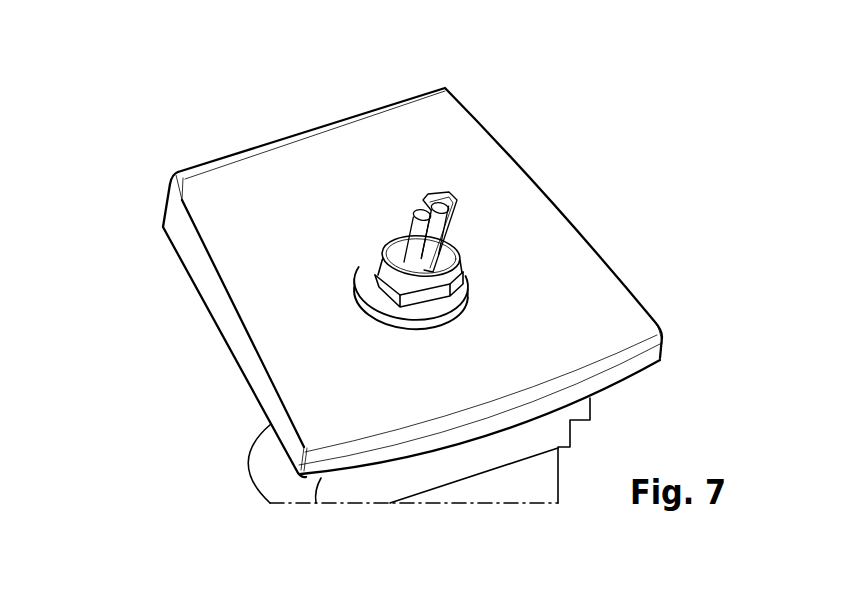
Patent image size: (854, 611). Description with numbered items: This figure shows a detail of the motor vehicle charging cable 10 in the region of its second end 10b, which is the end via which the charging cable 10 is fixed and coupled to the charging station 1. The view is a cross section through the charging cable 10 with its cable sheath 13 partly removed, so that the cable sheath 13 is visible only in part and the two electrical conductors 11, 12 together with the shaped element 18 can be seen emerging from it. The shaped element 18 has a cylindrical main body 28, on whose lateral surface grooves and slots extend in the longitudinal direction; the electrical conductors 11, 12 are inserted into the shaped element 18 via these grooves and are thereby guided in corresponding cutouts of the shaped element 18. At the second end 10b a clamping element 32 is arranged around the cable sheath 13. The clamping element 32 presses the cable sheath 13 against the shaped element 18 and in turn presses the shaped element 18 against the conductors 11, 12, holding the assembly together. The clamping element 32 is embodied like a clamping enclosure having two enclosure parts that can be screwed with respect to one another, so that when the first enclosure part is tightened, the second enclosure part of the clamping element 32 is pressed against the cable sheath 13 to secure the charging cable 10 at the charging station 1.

The charging station 1 is at (579, 104).
The motor vehicle charging cable 10 is at (472, 259).
The second end 10b is at (488, 196).
The electrical conductor 11 is at (412, 239).
The electrical conductor 12 is at (440, 206).
The cable sheath 13 is at (447, 238).
The shaped element 18 is at (412, 250).
The main body 28 is at (372, 282).
The clamping element 32 is at (451, 297).